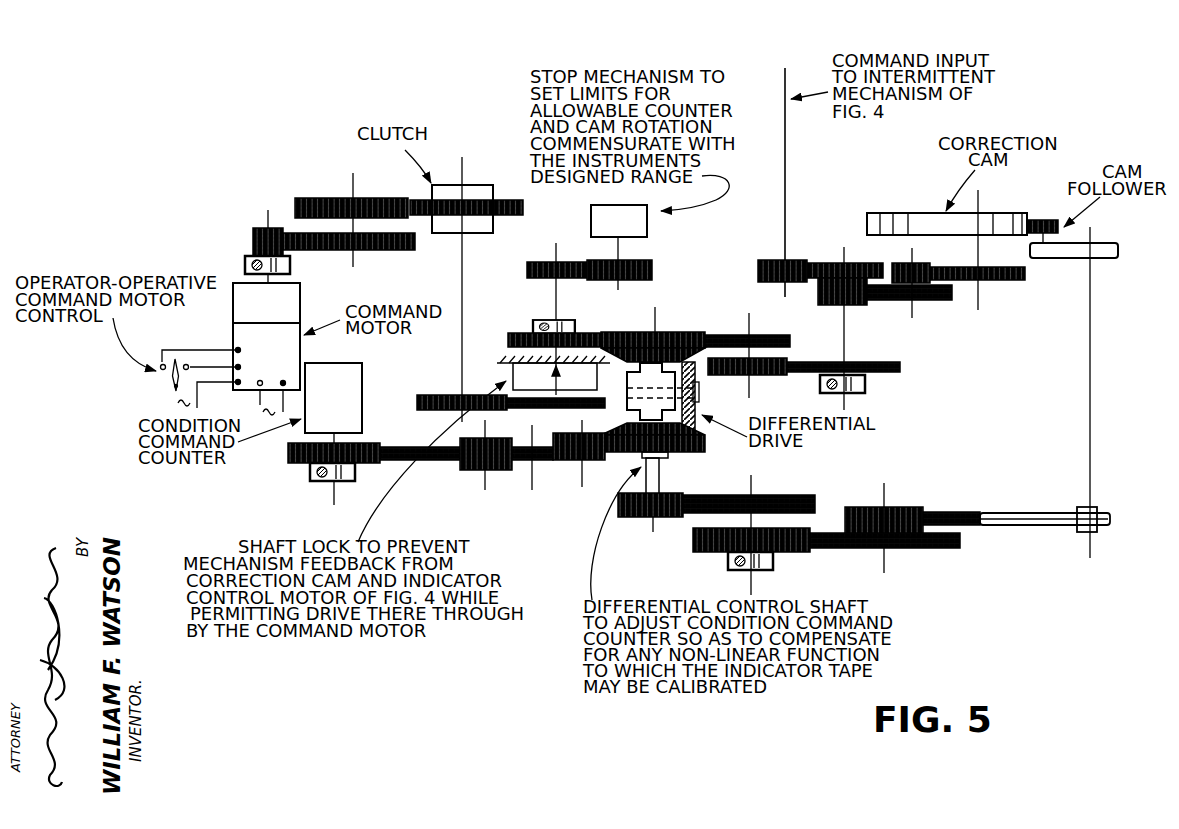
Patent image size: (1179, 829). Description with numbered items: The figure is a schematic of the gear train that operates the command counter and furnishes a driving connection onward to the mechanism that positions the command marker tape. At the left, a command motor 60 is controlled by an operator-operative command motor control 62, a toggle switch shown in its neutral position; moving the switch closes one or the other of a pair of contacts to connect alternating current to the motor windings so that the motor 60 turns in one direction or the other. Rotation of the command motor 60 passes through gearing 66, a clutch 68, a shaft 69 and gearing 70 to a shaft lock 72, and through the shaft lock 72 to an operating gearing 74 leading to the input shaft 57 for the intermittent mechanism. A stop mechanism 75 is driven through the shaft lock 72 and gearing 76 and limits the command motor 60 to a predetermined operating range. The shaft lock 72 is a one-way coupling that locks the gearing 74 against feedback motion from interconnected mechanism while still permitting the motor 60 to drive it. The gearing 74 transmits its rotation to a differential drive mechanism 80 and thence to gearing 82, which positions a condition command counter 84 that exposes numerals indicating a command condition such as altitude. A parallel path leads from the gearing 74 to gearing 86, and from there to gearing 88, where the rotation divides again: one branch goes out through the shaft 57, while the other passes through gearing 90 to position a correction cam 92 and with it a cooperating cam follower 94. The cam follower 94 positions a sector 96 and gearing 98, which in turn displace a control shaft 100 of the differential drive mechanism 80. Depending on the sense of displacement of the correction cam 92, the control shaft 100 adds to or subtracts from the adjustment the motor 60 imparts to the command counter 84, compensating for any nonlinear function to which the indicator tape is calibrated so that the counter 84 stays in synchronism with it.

The input shaft 57 is at (788, 148).
The command motor 60 is at (254, 364).
The operator-operative command motor control 62 is at (171, 384).
The gearing 66 is at (340, 198).
The clutch 68 is at (476, 193).
The shaft 69 is at (463, 288).
The gearing 70 is at (500, 411).
The shaft lock 72 is at (513, 373).
The operating gearing 74 is at (606, 329).
The stop mechanism 75 is at (650, 233).
The gearing 76 is at (590, 262).
The differential drive mechanism 80 is at (702, 391).
The gearing 82 is at (544, 462).
The condition command counter 84 is at (323, 425).
The gearing 86 is at (791, 359).
The gearing 88 is at (833, 259).
The gearing 90 is at (935, 266).
The correction cam 92 is at (913, 213).
The cam follower 94 is at (1055, 259).
The sector 96 is at (967, 530).
The gearing 98 is at (811, 553).
The control shaft 100 is at (662, 475).